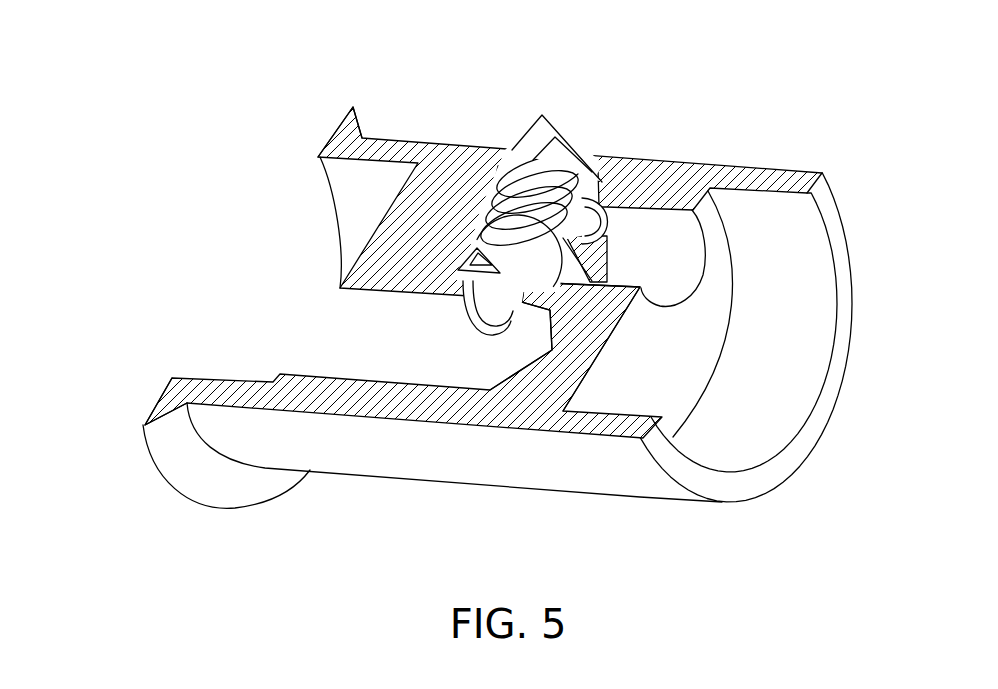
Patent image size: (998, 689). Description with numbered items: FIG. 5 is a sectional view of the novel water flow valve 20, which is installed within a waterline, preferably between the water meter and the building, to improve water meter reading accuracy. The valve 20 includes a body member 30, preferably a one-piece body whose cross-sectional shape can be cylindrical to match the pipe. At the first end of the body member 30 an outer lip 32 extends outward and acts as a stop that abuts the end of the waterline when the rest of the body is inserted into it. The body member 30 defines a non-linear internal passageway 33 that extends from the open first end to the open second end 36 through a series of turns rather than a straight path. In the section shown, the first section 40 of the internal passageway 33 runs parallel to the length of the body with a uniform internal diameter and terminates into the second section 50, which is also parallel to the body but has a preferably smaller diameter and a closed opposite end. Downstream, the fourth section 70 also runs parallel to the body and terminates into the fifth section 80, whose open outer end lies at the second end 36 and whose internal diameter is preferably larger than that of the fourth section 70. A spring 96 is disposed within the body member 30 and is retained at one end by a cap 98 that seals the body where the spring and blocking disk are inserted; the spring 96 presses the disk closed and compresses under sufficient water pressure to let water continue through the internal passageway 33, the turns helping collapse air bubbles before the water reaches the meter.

The valve 20 is at (853, 174).
The body member 30 is at (616, 472).
The lip 32 is at (366, 106).
The internal passageway 33 is at (358, 210).
The second end 36 is at (817, 408).
The first section 40 is at (382, 178).
The second section 50 is at (443, 363).
The fourth section 70 is at (661, 238).
The fifth section 80 is at (807, 340).
The spring 96 is at (584, 182).
The cap 98 is at (541, 113).